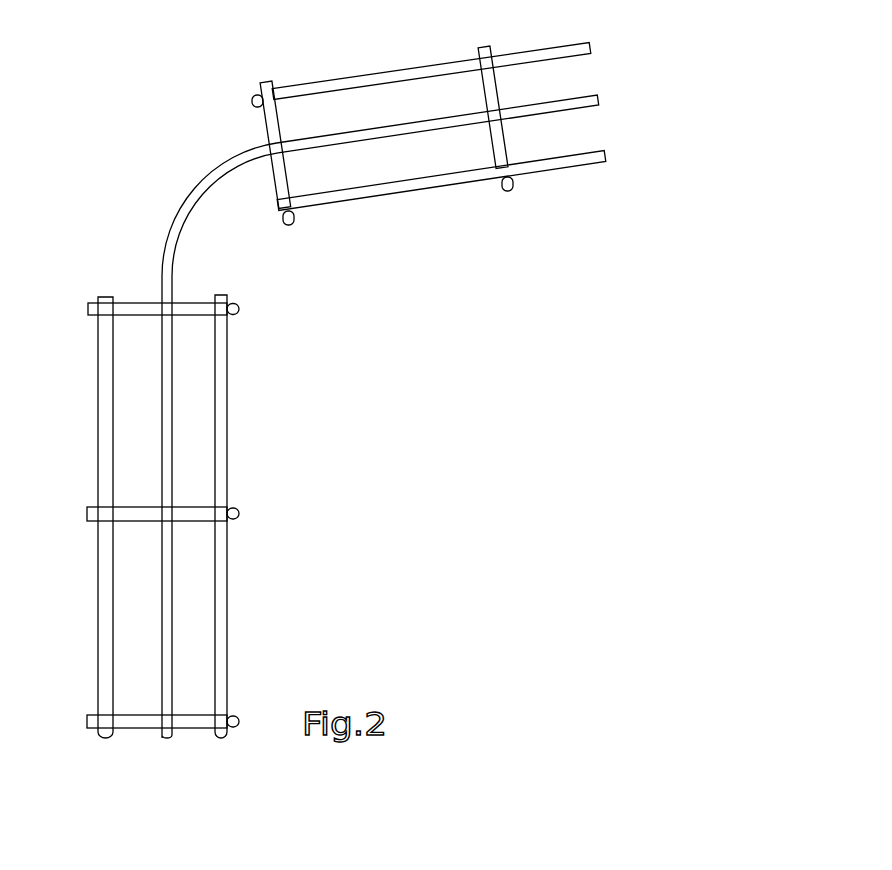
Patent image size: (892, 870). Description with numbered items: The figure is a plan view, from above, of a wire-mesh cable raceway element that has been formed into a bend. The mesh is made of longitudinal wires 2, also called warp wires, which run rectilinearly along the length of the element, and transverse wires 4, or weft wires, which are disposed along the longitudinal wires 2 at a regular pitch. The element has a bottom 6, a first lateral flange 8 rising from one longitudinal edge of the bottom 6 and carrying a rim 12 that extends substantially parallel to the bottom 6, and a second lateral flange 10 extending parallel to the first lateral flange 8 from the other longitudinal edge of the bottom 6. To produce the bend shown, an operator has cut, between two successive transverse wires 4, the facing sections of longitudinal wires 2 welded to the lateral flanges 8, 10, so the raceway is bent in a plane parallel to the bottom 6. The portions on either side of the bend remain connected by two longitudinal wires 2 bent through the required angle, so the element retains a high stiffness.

The longitudinal wire 2 is at (311, 384).
The transverse wire 4 is at (300, 387).
The bottom 6 is at (192, 302).
The first lateral flange 8 is at (97, 387).
The second lateral flange 10 is at (233, 600).
The rim 12 is at (163, 270).